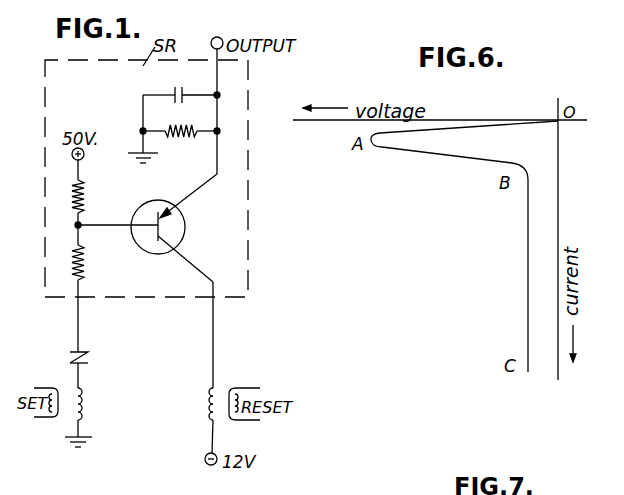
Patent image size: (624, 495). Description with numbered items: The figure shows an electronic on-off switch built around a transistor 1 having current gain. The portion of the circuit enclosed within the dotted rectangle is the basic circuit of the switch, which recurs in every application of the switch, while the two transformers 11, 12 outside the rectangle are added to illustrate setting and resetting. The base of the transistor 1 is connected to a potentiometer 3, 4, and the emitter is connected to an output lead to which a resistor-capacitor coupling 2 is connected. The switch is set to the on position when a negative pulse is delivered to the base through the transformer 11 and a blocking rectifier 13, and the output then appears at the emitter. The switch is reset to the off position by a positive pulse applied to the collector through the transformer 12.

The transistor 1 is at (187, 212).
The resistor-capacitor coupling 2 is at (177, 128).
The potentiometer 3 is at (70, 196).
The potentiometer 4 is at (69, 262).
The transformer 11 is at (93, 404).
The transformer 12 is at (195, 404).
The blocking rectifier 13 is at (68, 358).